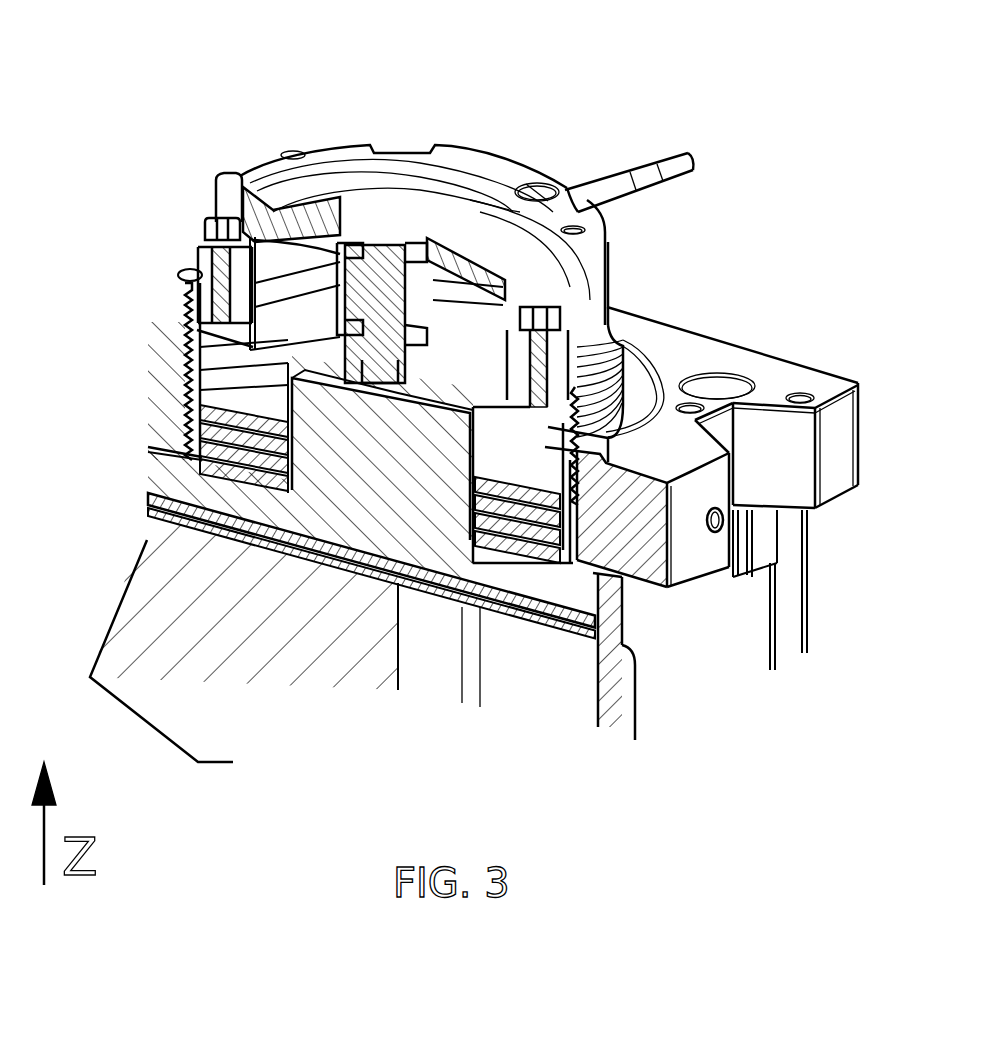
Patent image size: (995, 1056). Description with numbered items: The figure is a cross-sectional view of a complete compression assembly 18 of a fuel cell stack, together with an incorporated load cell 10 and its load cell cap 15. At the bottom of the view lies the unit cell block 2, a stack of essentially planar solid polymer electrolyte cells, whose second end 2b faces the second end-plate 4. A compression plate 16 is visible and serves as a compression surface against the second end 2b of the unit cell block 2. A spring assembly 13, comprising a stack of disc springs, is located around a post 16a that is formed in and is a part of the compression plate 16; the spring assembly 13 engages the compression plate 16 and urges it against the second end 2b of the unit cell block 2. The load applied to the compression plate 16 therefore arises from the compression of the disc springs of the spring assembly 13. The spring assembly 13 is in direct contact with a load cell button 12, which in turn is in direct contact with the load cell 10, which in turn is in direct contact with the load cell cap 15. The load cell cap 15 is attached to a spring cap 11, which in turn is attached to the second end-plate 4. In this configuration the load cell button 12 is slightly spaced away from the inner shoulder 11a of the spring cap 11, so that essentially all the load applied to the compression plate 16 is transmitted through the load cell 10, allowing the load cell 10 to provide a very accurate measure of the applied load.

The unit cell block 2 is at (635, 708).
The second end 2b is at (645, 613).
The second end-plate 4 is at (701, 469).
The load cell 10 is at (428, 195).
The spring cap 11 is at (676, 334).
The inner shoulder 11a is at (281, 549).
The load cell button 12 is at (398, 276).
The spring assembly 13 is at (572, 557).
The load cell cap 15 is at (425, 196).
The compression plate 16 is at (371, 646).
The post 16a is at (310, 543).
The compression assembly 18 is at (174, 354).